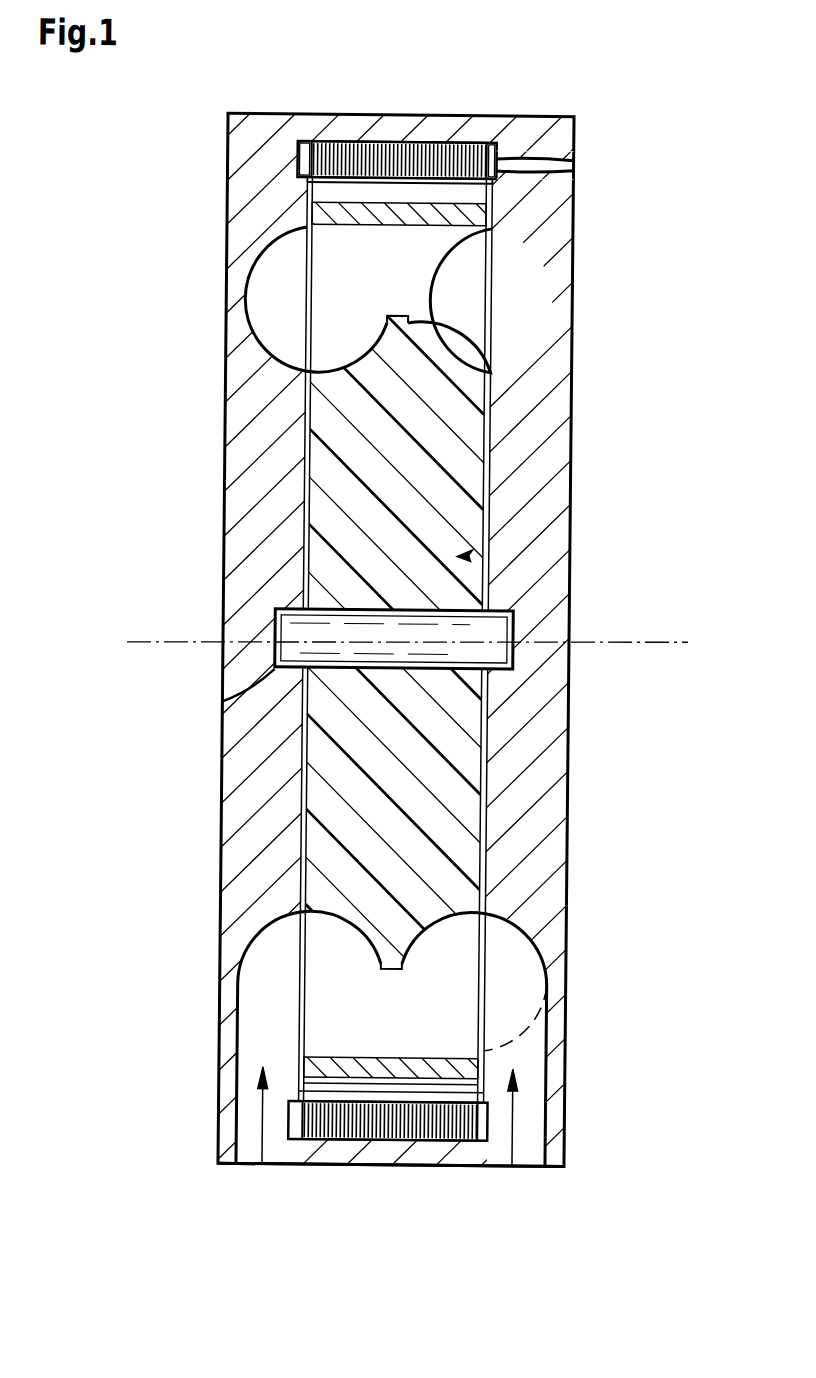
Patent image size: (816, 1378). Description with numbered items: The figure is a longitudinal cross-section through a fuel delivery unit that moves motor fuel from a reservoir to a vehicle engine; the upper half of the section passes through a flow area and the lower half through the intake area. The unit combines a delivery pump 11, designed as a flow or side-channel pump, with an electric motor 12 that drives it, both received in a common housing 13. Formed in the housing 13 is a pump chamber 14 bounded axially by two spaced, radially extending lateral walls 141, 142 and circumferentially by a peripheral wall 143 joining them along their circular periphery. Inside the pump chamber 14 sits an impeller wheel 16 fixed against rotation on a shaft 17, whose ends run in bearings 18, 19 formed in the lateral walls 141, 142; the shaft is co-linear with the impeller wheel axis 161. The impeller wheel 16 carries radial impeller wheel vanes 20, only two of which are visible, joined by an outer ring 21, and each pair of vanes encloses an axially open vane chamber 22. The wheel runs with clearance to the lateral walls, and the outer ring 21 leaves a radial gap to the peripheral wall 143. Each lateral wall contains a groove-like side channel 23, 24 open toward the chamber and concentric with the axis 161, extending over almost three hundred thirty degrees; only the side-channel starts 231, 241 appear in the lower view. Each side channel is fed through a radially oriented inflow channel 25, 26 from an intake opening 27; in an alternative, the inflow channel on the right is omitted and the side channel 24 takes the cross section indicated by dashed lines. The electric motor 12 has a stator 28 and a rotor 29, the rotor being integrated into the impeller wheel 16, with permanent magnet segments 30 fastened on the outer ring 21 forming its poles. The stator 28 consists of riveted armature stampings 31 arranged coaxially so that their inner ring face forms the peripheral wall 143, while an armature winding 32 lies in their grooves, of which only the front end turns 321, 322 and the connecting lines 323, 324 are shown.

The delivery pump 11 is at (286, 223).
The electric motor 12 is at (414, 166).
The housing 13 is at (234, 245).
The pump chamber 14 is at (489, 207).
The lateral wall 141 is at (298, 453).
The lateral wall 142 is at (490, 431).
The peripheral wall 143 is at (400, 181).
The impeller wheel 16 is at (471, 499).
The impeller wheel axis 161 is at (688, 640).
The shaft 17 is at (513, 621).
The bearing 18 is at (224, 702).
The bearing 19 is at (513, 667).
The impeller wheel vane 20 is at (459, 292).
The outer ring 21 is at (436, 213).
The vane chamber 22 is at (406, 289).
The side channel 23 is at (259, 311).
The side channel 24 is at (537, 324).
The inflow channel 25 is at (252, 1062).
The inflow channel 26 is at (534, 1059).
The intake opening 27 is at (270, 1168).
The stator 28 is at (337, 142).
The rotor 29 is at (466, 553).
The permanent magnet segment 30 is at (466, 193).
The armature stampings 31 is at (378, 161).
The armature winding 32 is at (302, 142).
The front end turn 321 is at (295, 148).
The outlet passage 322 is at (548, 141).
The connecting line 323 is at (545, 142).
The connecting line 324 is at (543, 171).
The side-channel start 231 is at (261, 980).
The side-channel start 241 is at (523, 991).